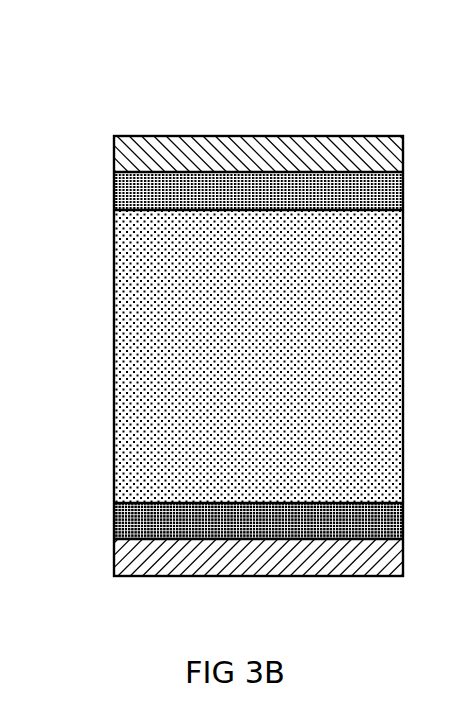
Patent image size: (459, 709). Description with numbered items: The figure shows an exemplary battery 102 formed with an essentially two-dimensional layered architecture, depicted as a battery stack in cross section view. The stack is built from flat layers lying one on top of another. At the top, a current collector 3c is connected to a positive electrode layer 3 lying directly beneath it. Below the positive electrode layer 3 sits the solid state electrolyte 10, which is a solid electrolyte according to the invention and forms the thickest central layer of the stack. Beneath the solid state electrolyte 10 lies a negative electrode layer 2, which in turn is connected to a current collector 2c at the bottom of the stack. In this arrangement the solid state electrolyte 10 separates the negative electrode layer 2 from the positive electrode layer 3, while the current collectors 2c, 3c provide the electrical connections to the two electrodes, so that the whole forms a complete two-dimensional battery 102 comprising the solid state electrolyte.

The battery 102 is at (145, 102).
The current collector 3c is at (358, 154).
The positive electrode layer 3 is at (182, 187).
The solid state electrolyte 10 is at (167, 382).
The negative electrode layer 2 is at (182, 523).
The current collector 2c is at (352, 560).